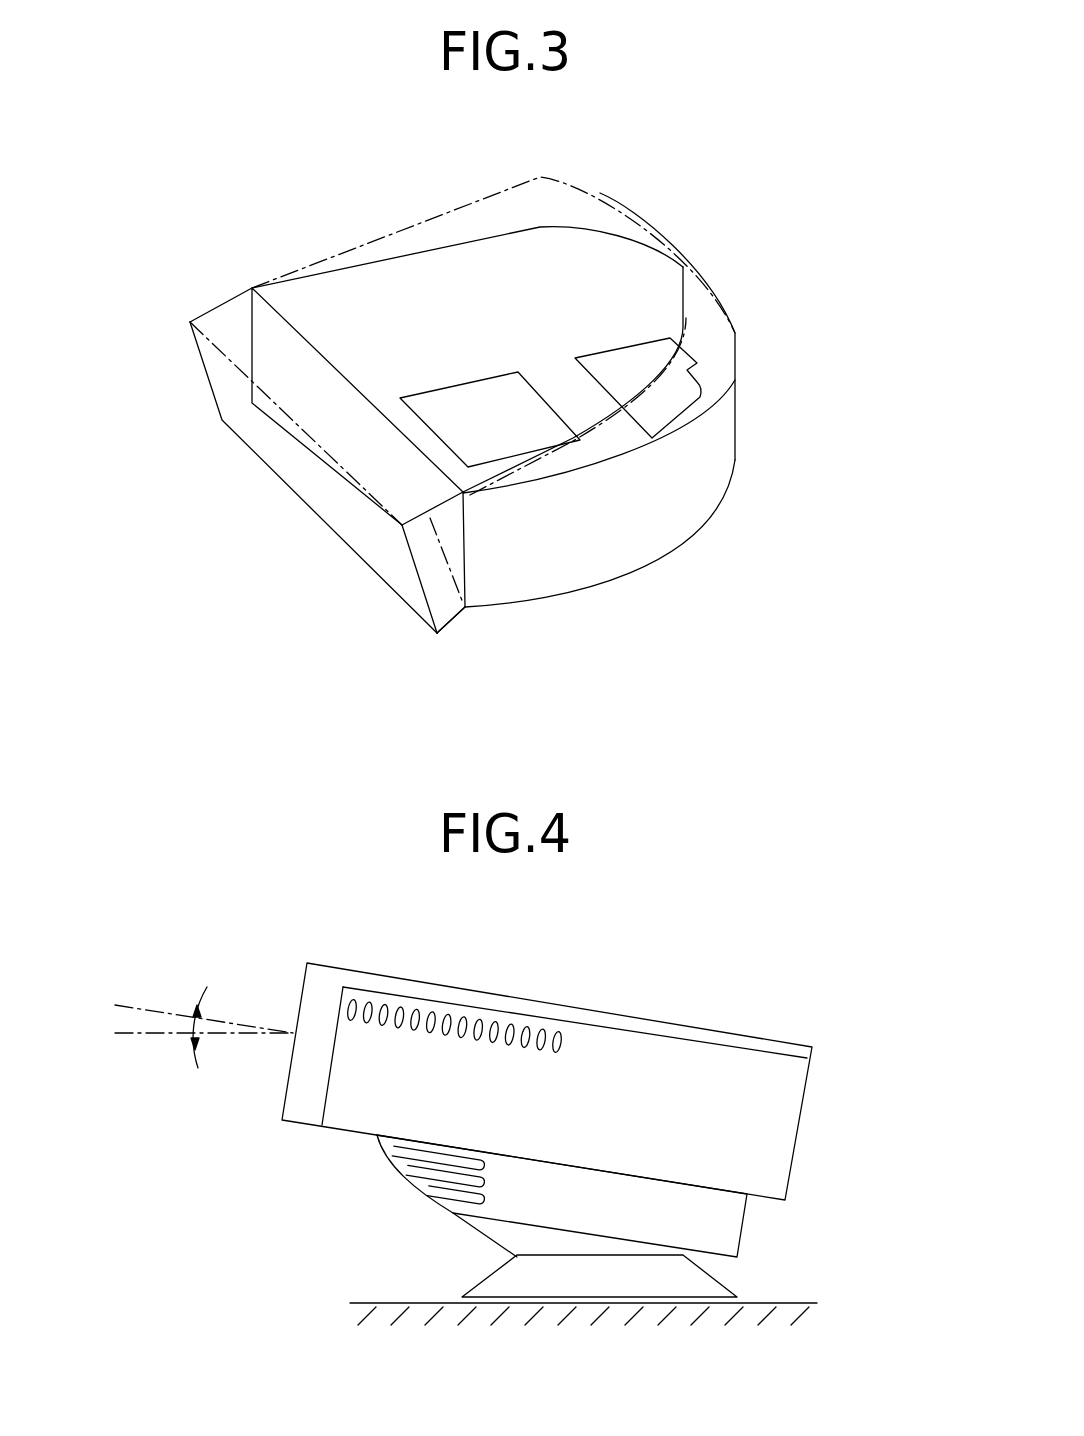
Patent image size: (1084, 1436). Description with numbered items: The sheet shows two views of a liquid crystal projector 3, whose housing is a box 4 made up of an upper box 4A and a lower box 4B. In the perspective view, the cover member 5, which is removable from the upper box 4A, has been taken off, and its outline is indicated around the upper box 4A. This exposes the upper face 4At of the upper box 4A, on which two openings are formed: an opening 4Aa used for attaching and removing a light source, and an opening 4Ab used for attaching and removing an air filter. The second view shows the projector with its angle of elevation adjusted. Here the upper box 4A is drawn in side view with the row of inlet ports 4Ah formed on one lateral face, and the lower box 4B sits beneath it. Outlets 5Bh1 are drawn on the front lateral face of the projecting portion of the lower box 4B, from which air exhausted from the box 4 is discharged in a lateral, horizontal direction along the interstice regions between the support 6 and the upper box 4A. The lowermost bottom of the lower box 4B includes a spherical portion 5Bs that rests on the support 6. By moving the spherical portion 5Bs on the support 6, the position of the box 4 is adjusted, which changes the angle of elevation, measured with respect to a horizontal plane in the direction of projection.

In FIG. 3, the liquid crystal projector 3 is at (688, 676).
In FIG. 4, the box 4 is at (595, 1096).
In FIG. 3, the upper box 4A is at (682, 497).
In FIG. 4, the upper box 4A is at (578, 1059).
In FIG. 3, the upper face 4At is at (695, 300).
In FIG. 3, the opening 4Aa is at (690, 392).
In FIG. 3, the opening 4Ab is at (573, 440).
In FIG. 4, the inlet ports 4Ah is at (440, 1008).
In FIG. 4, the lower box 4B is at (573, 1205).
In FIG. 3, the cover member 5 is at (547, 178).
In FIG. 4, the cover member 5 is at (623, 1023).
In FIG. 4, the vent slots in lower casing 5Bh1 is at (432, 1170).
In FIG. 4, the spherical portion 5Bs is at (490, 1228).
In FIG. 4, the support 6 is at (703, 1276).